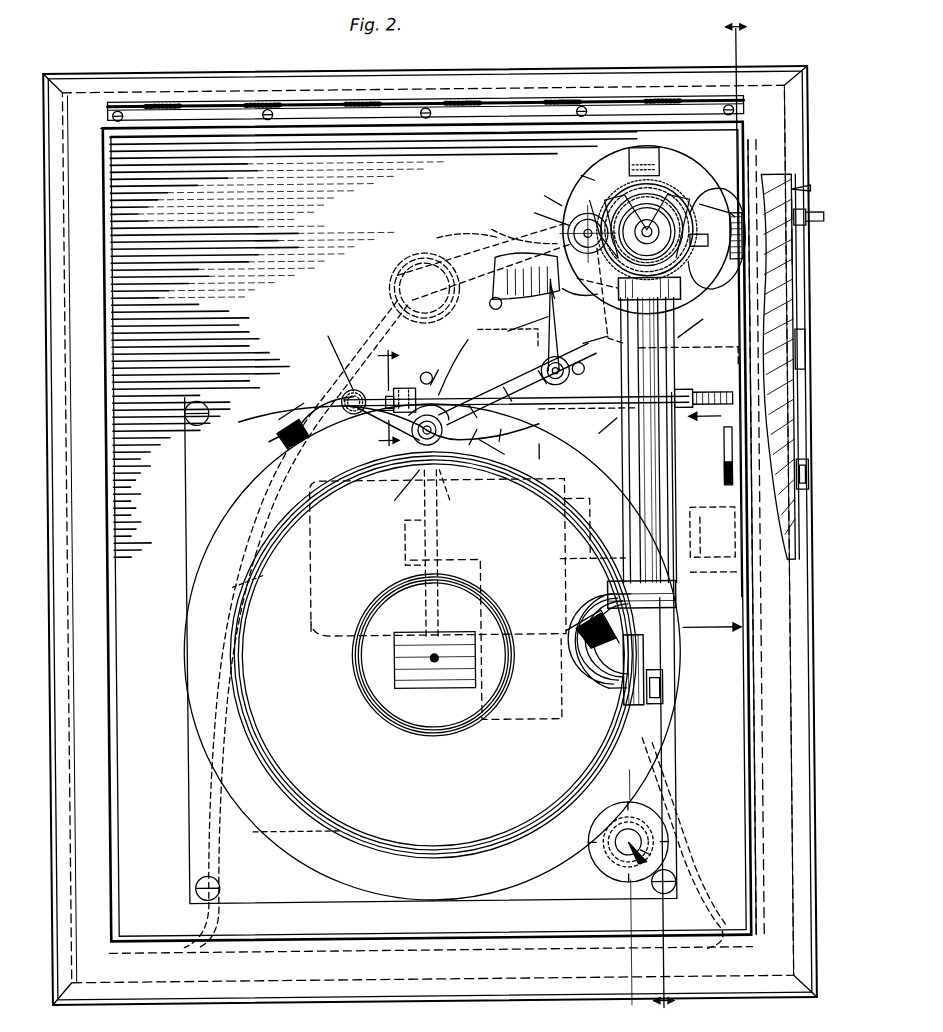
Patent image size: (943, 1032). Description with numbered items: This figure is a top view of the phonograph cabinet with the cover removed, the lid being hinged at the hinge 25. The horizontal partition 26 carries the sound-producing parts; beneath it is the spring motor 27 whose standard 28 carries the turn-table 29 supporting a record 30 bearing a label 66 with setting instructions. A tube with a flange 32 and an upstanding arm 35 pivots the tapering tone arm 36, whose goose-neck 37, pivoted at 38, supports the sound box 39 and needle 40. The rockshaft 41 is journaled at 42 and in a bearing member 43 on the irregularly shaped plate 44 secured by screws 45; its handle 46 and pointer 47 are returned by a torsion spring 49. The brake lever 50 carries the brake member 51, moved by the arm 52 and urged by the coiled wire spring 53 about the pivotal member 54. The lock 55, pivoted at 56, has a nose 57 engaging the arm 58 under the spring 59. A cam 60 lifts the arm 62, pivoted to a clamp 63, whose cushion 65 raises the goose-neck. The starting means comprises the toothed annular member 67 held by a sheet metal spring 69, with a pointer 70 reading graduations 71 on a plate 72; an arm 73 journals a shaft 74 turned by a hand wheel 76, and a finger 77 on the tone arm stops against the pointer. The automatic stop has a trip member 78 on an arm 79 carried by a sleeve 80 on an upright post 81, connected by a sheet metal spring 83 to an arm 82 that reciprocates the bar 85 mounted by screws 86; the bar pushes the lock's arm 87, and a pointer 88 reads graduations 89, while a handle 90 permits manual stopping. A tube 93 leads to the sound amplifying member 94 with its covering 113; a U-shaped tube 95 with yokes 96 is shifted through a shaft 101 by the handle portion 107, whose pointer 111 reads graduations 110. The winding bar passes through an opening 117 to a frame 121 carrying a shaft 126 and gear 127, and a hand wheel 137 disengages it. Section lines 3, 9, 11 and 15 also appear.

The section line 3- 3 is at (700, 514).
The drive belt 9 is at (576, 448).
The section line 11- 11 is at (391, 391).
The section line 15- 15 is at (715, 520).
The hinge 25 is at (455, 100).
The horizontal partition 26 is at (375, 344).
The spring motor 27 is at (430, 520).
The standard 28 is at (436, 640).
The turn-table 29 is at (236, 535).
The record 30 is at (272, 812).
The flange 32 is at (574, 169).
The upstanding arm 35 is at (647, 235).
The tone arm 36 is at (660, 365).
The goose-neck 37 is at (572, 672).
The pivot 38 is at (675, 605).
The sound box 39 is at (630, 768).
The needle 40 is at (664, 708).
The rockshaft 41 is at (516, 414).
The journal 42 is at (809, 366).
The bearing member 43 is at (400, 385).
The irregularly shaped plate 44 is at (502, 451).
The screws 45 is at (496, 296).
The manually operable handle 46 is at (808, 291).
The pointer 47 is at (811, 349).
The torsion spring 49 is at (712, 393).
The brake lever 50 is at (318, 395).
The brake member 51 is at (288, 443).
The arm 52 is at (370, 395).
The coiled wire spring 53 is at (333, 353).
The pivotal member 54 is at (340, 412).
The lock 55 is at (440, 425).
The pivot 56 is at (395, 489).
The nose 57 is at (445, 369).
The arm 58 is at (457, 357).
The spring 59 is at (455, 489).
The cam 60 is at (611, 424).
The arm 62 is at (724, 470).
The clamp 63 is at (680, 288).
The cushion 65 is at (598, 680).
The label 66 is at (435, 688).
The annular member 67 is at (680, 188).
The sheet metal spring 69 is at (632, 162).
The pointer 70 is at (690, 180).
The graduations 71 is at (703, 318).
The plate 72 is at (735, 200).
The arm 73 is at (555, 295).
The shaft 74 is at (568, 237).
The hand wheel 76 is at (541, 213).
The finger 77 is at (716, 238).
The trip member 78 is at (562, 305).
The arm 79 is at (596, 347).
The sleeve 80 is at (508, 329).
The upright post 81 is at (542, 455).
The arm 82 is at (528, 323).
The sheet metal spring 83 is at (543, 378).
The bar 85 is at (510, 380).
The screws 86 is at (472, 427).
The arm 87 is at (382, 412).
The pointer 88 is at (583, 285).
The graduations 89 is at (524, 265).
The manually operable handle 90 is at (508, 425).
The tube 93 is at (424, 288).
The sound amplifying member 94 is at (703, 886).
The U-shaped tube 95 is at (456, 230).
The yokes 96 is at (508, 228).
The shaft 101 is at (688, 347).
The handle portion 107 is at (813, 229).
The graduations 110 is at (690, 490).
The pointer 111 is at (807, 192).
The covering 113 is at (185, 846).
The opening 117 is at (726, 446).
The frame 121 is at (715, 574).
The shaft 126 is at (704, 530).
The gear 127 is at (562, 556).
The hand wheel 137 is at (805, 490).